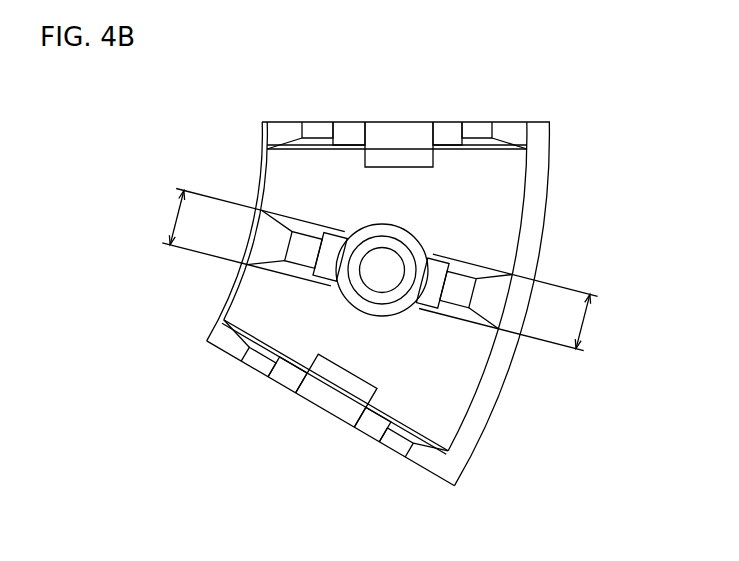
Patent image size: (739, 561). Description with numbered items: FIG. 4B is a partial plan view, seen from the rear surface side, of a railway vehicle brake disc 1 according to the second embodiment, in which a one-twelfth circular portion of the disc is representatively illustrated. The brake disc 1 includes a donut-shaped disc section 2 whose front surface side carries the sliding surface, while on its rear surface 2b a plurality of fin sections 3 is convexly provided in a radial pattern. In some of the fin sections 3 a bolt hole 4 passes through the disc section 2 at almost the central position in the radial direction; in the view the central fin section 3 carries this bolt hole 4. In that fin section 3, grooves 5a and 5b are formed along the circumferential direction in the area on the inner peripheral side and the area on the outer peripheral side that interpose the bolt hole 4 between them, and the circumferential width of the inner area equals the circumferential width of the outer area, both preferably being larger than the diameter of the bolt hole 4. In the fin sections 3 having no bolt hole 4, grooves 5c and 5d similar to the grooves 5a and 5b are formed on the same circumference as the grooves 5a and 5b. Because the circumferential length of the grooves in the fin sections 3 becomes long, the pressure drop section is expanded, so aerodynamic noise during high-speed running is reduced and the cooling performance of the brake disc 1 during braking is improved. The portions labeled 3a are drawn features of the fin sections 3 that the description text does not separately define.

The brake disc 1 is at (247, 127).
The disc section 2 is at (490, 418).
The rear surface 2b is at (447, 408).
The fin section 3 is at (512, 128).
The thin portion of rib 3a is at (318, 128).
The bolt hole 4 is at (388, 261).
The groove 5a is at (326, 240).
The groove 5b is at (442, 272).
The groove 5c is at (352, 130).
The groove 5d is at (447, 130).